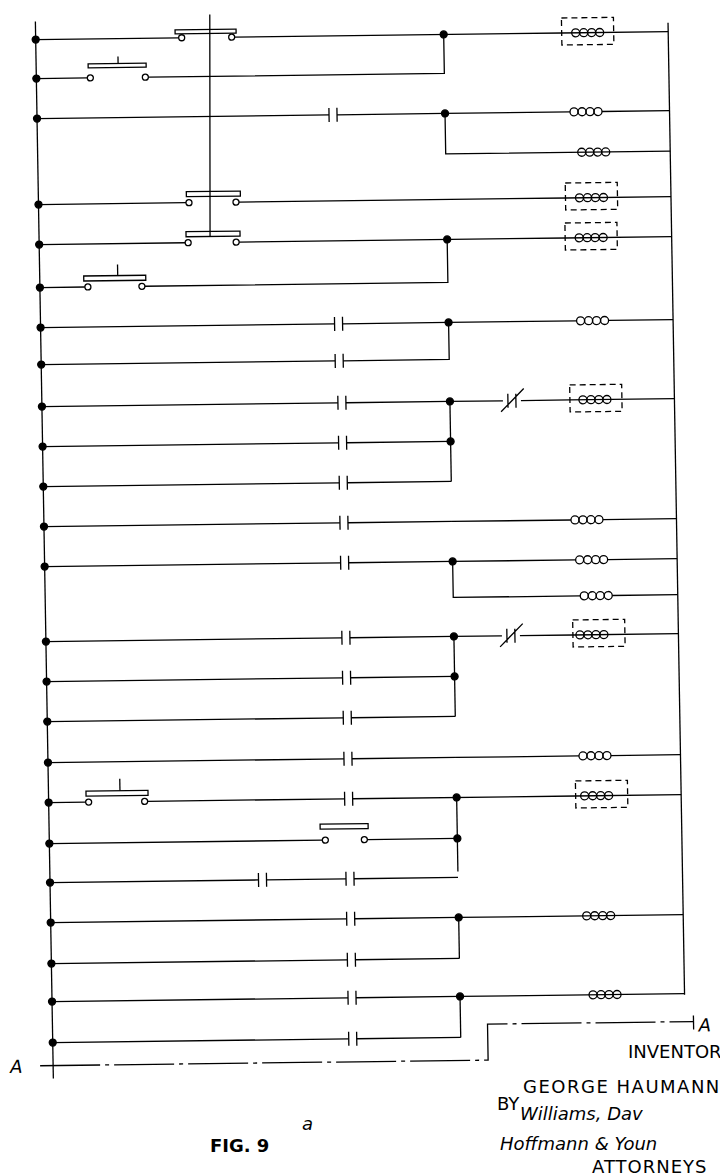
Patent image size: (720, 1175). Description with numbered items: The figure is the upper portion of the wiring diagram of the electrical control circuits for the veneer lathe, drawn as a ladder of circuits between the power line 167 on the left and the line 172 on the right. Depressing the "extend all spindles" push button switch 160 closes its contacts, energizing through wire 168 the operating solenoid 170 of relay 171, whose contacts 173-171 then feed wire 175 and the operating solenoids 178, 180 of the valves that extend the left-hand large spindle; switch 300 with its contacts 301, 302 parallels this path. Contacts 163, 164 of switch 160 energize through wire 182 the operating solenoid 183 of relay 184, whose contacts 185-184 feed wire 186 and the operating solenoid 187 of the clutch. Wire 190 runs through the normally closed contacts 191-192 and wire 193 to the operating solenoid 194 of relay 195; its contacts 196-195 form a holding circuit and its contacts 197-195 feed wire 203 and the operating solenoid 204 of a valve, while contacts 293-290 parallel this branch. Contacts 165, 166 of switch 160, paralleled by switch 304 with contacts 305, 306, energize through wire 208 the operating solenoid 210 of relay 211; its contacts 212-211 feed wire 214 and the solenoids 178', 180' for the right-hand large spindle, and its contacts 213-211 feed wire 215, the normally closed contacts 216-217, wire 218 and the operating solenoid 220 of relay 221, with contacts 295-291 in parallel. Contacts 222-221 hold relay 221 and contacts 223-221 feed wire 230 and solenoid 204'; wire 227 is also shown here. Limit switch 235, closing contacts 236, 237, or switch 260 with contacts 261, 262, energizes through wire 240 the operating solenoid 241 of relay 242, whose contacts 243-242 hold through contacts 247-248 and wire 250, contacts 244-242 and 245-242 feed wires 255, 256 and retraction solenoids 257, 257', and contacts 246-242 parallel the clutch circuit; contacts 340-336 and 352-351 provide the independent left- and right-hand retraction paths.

The "extend all spindles" push button switch 160 is at (212, 20).
The contact of switch 160 163 is at (187, 207).
The contact of switch 160 164 is at (232, 209).
The contact of switch 160 165 is at (193, 247).
The contact of switch 160 166 is at (231, 250).
The power line 167 is at (35, 30).
The wire 168 is at (384, 39).
The operating solenoid of relay 171 170 is at (562, 34).
The relay 171 is at (614, 31).
The line 172 is at (668, 32).
The contacts 173 of relay 171 173-171 is at (337, 108).
The wire 175 is at (509, 113).
The operating solenoid of valve 131 178 is at (620, 99).
The operating solenoid of valve 141 180 is at (557, 134).
The wire 182 is at (436, 202).
The operating solenoid of relay 184 183 is at (576, 196).
The relay 184 is at (624, 187).
The contacts 185 of relay 184 185-184 is at (337, 310).
The wire 186 is at (519, 322).
The operating solenoid of clutch 181 187 is at (592, 298).
The wire 190 is at (443, 486).
The normally closed contacts 191 of relay 192 191-192 is at (506, 414).
The wire 193 is at (542, 410).
The operating solenoid of relay 195 194 is at (592, 390).
The relay 195 is at (613, 399).
The contacts 196 of relay 195 196-195 is at (339, 436).
The contacts 197 of relay 195 197-195 is at (339, 516).
The wire 203 is at (507, 519).
The operating solenoid of valve 137 204 is at (621, 502).
The wire 208 is at (435, 241).
The operating solenoid of relay 211 210 is at (568, 234).
The relay 211 is at (614, 233).
The contacts 212 of relay 211 212-211 is at (337, 556).
The contacts 213 of relay 211 213-211 is at (339, 628).
The wire 214 is at (442, 557).
The wire 215 is at (443, 721).
The normally closed contacts 216 of relay 217 216-217 is at (492, 652).
The wire 218 is at (527, 629).
The operating solenoid of relay 221 220 is at (562, 635).
The relay 221 is at (614, 631).
The contacts 222 of relay 221 222-221 is at (339, 671).
The contacts 223 of relay 221 223-221 is at (338, 752).
The conductor 227 is at (266, 680).
The wire 230 is at (515, 755).
The limit switch 235 is at (320, 828).
The contact of limit switch 235 236 is at (307, 844).
The contact of limit switch 235 237 is at (357, 844).
The wire 240 is at (443, 877).
The operating solenoid of relay 242 241 is at (563, 796).
The relay 242 is at (627, 786).
The contacts 243 of relay 242 243-242 is at (339, 876).
The contacts 244 of relay 242 244-242 is at (341, 916).
The contacts 245 of relay 242 245-242 is at (340, 996).
The contacts 246 of relay 242 246-242 is at (337, 351).
The contacts 247 of relay 248 247-248 is at (248, 878).
The wire 250 is at (306, 881).
The wire 255 is at (443, 963).
The wire 256 is at (443, 1042).
The operating solenoid of valve 131 257 is at (569, 903).
The "retract both large spindles" push button switch 260 is at (116, 780).
The contact of switch 260 261 is at (80, 806).
The contact of switch 260 262 is at (129, 807).
The contacts 293 of relay 290 293-290 is at (339, 476).
The contacts 295 of relay 291 295-291 is at (339, 711).
The "extend left-hand large spindle" push button switch 300 is at (122, 58).
The contact of switch 300 301 is at (96, 83).
The contact of switch 300 302 is at (142, 84).
The "extend right large spindle" push button switch 304 is at (118, 266).
The contact of switch 304 305 is at (97, 300).
The contact of switch 304 306 is at (134, 292).
The contacts 340 of relay 336 340-336 is at (341, 956).
The contacts 352 of relay 351 352-351 is at (339, 1036).
The operating solenoid of valve 131' 178' is at (624, 540).
The operating solenoid of valve 141' 180' is at (621, 579).
The operating solenoid of valve 137' 204' is at (628, 739).
The operating solenoid of valve 131' 257' is at (570, 982).